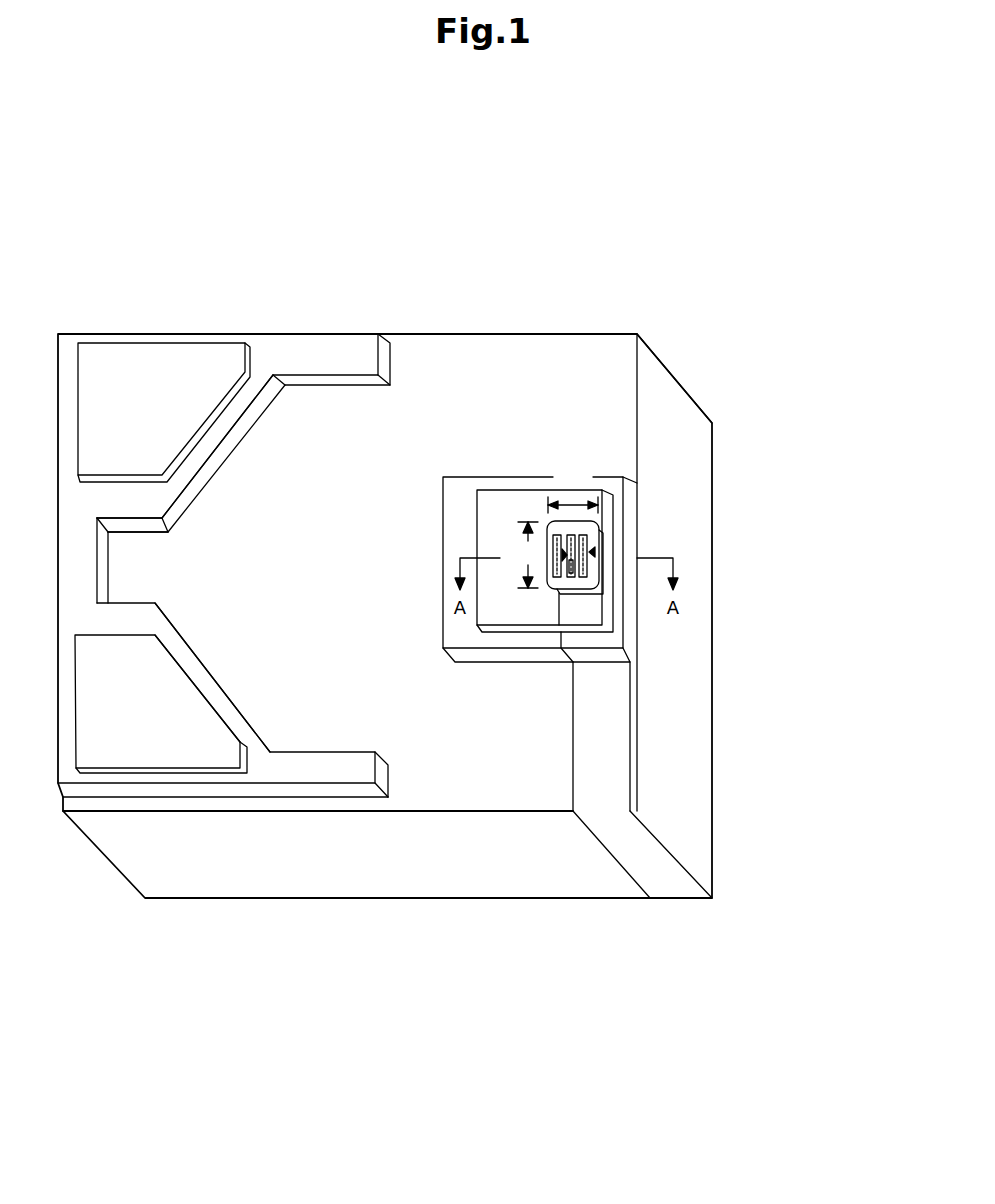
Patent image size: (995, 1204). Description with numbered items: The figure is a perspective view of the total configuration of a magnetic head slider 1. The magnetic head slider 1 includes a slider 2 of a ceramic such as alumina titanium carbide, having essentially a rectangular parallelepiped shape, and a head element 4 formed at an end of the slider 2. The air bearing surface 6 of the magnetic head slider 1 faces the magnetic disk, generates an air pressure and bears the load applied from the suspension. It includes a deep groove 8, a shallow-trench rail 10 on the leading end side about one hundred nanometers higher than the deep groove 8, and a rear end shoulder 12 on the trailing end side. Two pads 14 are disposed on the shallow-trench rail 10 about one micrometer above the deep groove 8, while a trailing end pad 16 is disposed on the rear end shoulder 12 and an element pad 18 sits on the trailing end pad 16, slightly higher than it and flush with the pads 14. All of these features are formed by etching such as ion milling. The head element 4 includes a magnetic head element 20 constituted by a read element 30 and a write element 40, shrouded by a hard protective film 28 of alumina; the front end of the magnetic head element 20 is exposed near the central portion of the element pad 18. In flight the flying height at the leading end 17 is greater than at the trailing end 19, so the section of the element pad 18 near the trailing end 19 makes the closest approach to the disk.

The magnetic head slider 1 is at (180, 257).
The slider 2 is at (352, 865).
The head element 4 is at (663, 865).
The air bearing surface 6 is at (426, 387).
The deep groove 8 is at (342, 573).
The shallow-trench rail 10 is at (77, 588).
The rear end shoulder 12 is at (458, 487).
The pads 14 is at (148, 453).
The trailing end pad 16 is at (508, 503).
The leading end 17 is at (60, 550).
The element pad 18 is at (597, 522).
The trailing end 19 is at (630, 750).
The magnetic head element 20 is at (847, 502).
The hard protective film 28 is at (685, 833).
The read element 30 is at (572, 573).
The write element 40 is at (592, 553).